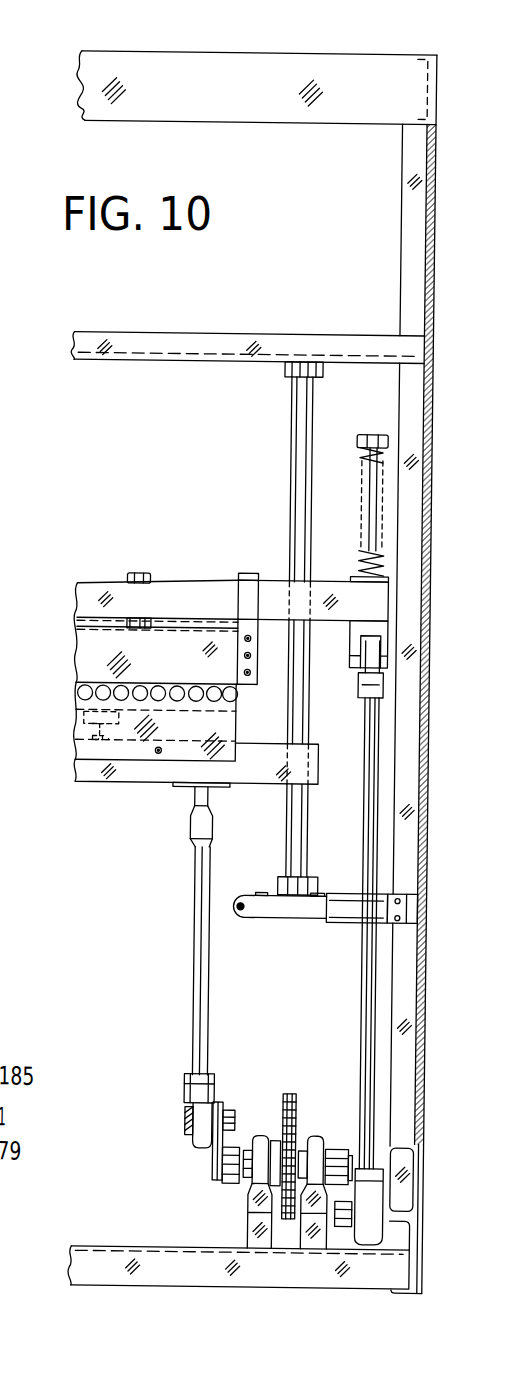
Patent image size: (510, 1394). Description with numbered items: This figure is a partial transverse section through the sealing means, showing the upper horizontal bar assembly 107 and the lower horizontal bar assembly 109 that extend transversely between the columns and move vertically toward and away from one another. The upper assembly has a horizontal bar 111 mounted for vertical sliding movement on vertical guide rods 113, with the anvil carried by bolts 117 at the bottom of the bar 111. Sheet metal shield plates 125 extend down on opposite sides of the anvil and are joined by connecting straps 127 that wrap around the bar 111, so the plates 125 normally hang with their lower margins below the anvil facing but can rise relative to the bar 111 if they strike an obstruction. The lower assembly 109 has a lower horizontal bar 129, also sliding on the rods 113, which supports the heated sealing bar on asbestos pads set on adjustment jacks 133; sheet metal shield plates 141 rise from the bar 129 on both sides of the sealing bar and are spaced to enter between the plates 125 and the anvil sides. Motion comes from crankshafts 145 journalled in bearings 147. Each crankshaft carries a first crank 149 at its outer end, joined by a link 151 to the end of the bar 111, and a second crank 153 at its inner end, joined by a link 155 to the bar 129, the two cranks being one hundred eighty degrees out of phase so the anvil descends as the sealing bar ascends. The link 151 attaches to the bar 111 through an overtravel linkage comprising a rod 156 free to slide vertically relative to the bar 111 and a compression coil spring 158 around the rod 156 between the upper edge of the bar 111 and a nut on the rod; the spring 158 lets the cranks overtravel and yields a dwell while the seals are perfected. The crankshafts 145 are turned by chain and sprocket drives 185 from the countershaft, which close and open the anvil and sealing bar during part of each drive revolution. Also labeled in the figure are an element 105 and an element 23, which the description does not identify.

The hub plate 23 is at (180, 1085).
The frame member 105 is at (428, 531).
The upper horizontal bar assembly 107 is at (103, 544).
The lower horizontal bar assembly 109 is at (121, 787).
The horizontal bar 111 is at (379, 601).
The vertical guide rods 113 is at (293, 441).
The bolts 117 is at (141, 575).
The sheet metal shield plates 125 is at (104, 654).
The connecting straps 127 is at (242, 574).
The lower horizontal bar 129 is at (261, 784).
The adjustment jacks 133 is at (88, 718).
The sheet metal shield plates 141 is at (222, 723).
The crankshafts 145 is at (218, 1161).
The bearings 147 is at (320, 1249).
The first crank 149 is at (353, 1230).
The link 151 is at (366, 992).
The second crank 153 is at (222, 1103).
The link 155 is at (198, 966).
The rod 156 is at (378, 497).
The compression coil spring 158 is at (378, 567).
The chain and sprocket drives 185 is at (298, 1092).